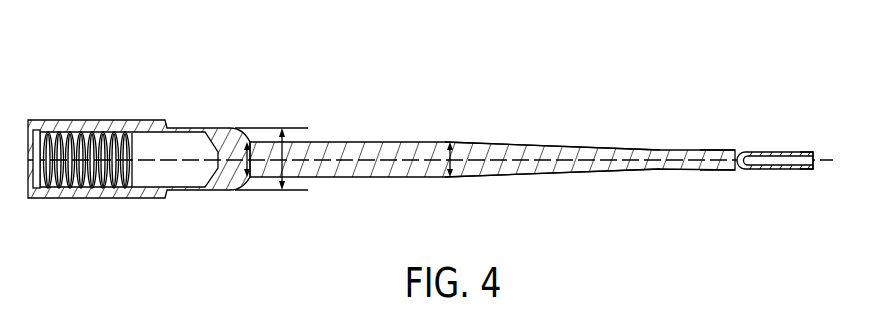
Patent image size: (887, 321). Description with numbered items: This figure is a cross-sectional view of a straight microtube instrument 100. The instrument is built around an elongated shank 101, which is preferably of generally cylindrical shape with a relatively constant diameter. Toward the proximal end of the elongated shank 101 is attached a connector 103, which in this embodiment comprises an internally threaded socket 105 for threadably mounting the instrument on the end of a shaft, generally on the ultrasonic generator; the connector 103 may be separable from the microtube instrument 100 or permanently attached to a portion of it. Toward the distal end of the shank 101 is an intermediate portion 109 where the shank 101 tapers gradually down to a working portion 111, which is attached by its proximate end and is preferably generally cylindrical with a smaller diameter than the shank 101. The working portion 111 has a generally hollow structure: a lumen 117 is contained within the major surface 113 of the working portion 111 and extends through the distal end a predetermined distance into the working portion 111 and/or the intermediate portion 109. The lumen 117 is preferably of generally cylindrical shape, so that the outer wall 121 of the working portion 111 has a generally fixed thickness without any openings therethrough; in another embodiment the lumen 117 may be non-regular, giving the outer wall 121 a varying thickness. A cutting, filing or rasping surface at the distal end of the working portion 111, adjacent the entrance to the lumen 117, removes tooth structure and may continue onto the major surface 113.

The microtube instrument 100 is at (509, 72).
The elongated shank 101 is at (397, 179).
The connector 103 is at (125, 199).
The internally threaded socket 105 is at (94, 121).
The intermediate portion 109 is at (540, 173).
The working portion 111 is at (722, 150).
The major surface 113 is at (718, 171).
The lumen 117 is at (777, 157).
The outer wall 121 is at (806, 153).